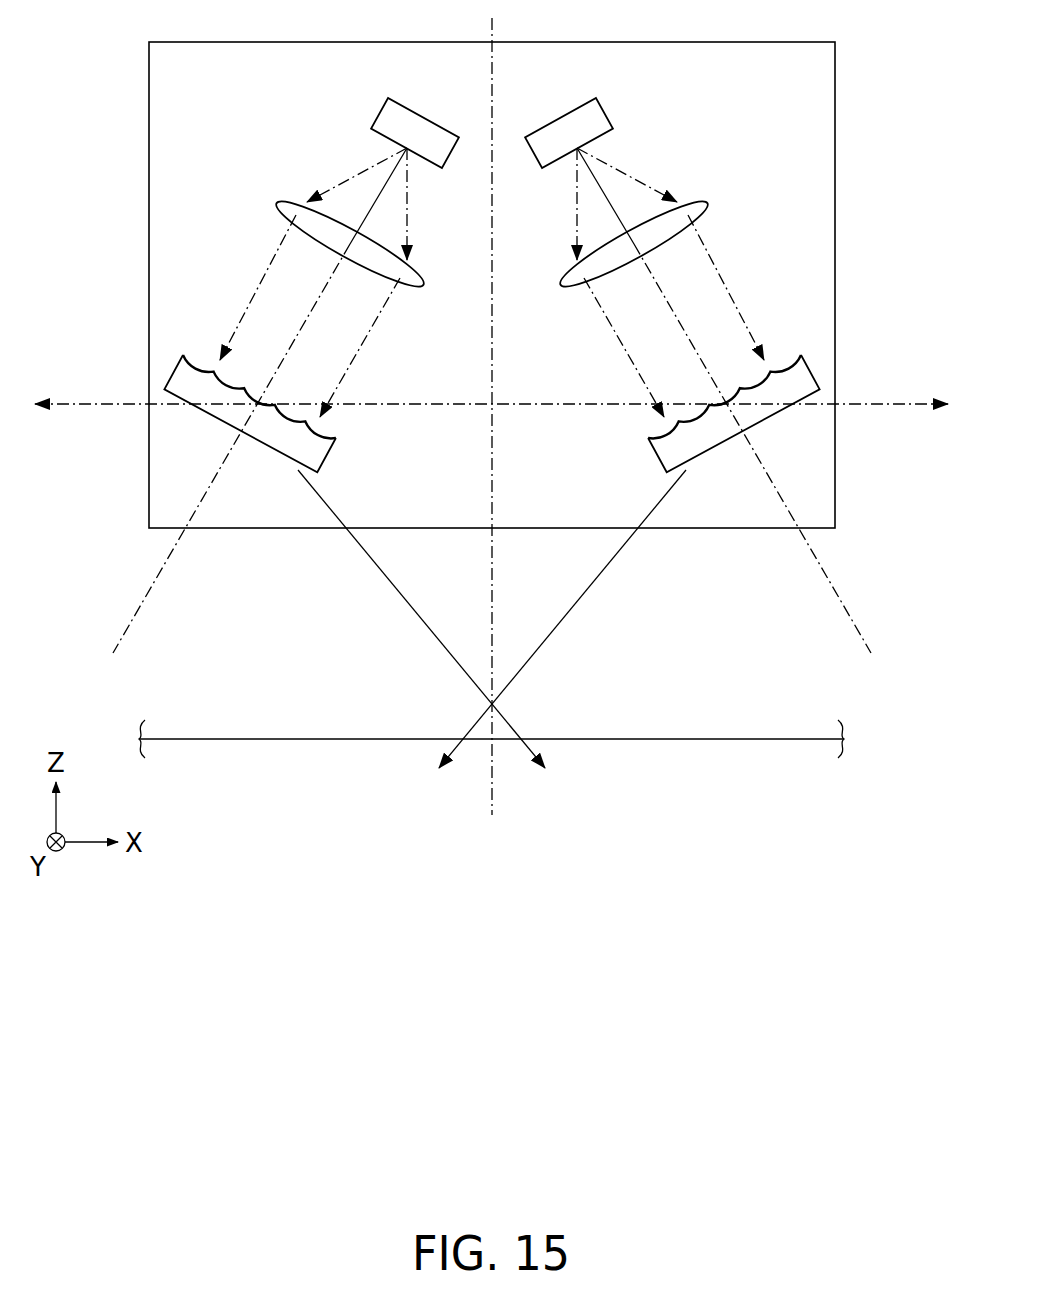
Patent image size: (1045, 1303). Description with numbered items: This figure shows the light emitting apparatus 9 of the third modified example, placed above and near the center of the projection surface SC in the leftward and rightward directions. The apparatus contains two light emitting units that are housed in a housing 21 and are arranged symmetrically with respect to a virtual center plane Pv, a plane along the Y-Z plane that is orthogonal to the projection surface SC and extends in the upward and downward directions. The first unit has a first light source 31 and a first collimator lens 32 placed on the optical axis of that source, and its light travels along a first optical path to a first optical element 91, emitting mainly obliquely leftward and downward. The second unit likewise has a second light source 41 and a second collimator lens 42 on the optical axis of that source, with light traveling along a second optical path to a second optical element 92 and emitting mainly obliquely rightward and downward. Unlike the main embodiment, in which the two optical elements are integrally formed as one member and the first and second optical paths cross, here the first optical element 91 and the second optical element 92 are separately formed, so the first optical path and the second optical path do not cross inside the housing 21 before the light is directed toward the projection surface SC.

The light emitting apparatus 9 is at (491, 407).
The housing 21 is at (836, 263).
The first light source 31 is at (578, 120).
The first collimator lens 32 is at (687, 203).
The second light source 41 is at (402, 118).
The second collimator lens 42 is at (303, 203).
The first optical element 91 is at (672, 454).
The second optical element 92 is at (312, 454).
The projection surface SC is at (808, 738).
The virtual center plane Pv is at (493, 800).